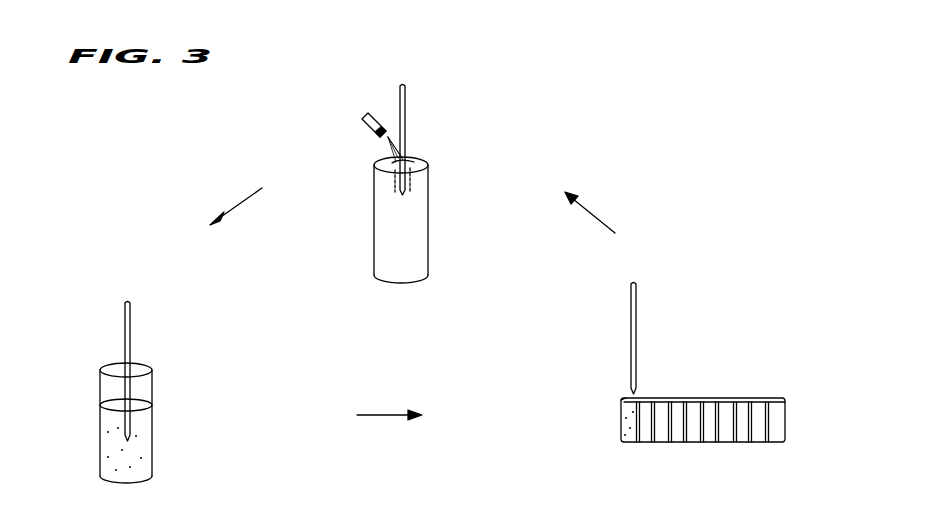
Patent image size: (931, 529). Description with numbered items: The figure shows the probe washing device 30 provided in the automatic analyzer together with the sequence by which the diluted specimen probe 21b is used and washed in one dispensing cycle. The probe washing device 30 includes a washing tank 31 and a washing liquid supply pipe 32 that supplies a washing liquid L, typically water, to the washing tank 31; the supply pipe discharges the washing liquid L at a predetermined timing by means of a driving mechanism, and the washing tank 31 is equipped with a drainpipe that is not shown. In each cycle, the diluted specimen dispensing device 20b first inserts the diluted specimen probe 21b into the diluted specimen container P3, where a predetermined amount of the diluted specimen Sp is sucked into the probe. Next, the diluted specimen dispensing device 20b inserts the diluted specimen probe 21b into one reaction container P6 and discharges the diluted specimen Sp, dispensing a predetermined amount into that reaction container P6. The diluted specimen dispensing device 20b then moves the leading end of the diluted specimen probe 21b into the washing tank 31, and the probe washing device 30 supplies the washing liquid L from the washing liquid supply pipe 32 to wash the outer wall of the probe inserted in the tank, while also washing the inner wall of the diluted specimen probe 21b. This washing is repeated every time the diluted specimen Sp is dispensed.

The diluted specimen dispensing device 20b is at (386, 72).
The diluted specimen probe 21b is at (405, 100).
The probe washing device 30 is at (343, 177).
The washing tank 31 is at (430, 230).
The washing liquid supply pipe 32 is at (372, 117).
The washing liquid L is at (412, 157).
The diluted specimen container P3 is at (152, 377).
The diluted specimen Sp is at (130, 397).
The reaction container P6 is at (630, 442).